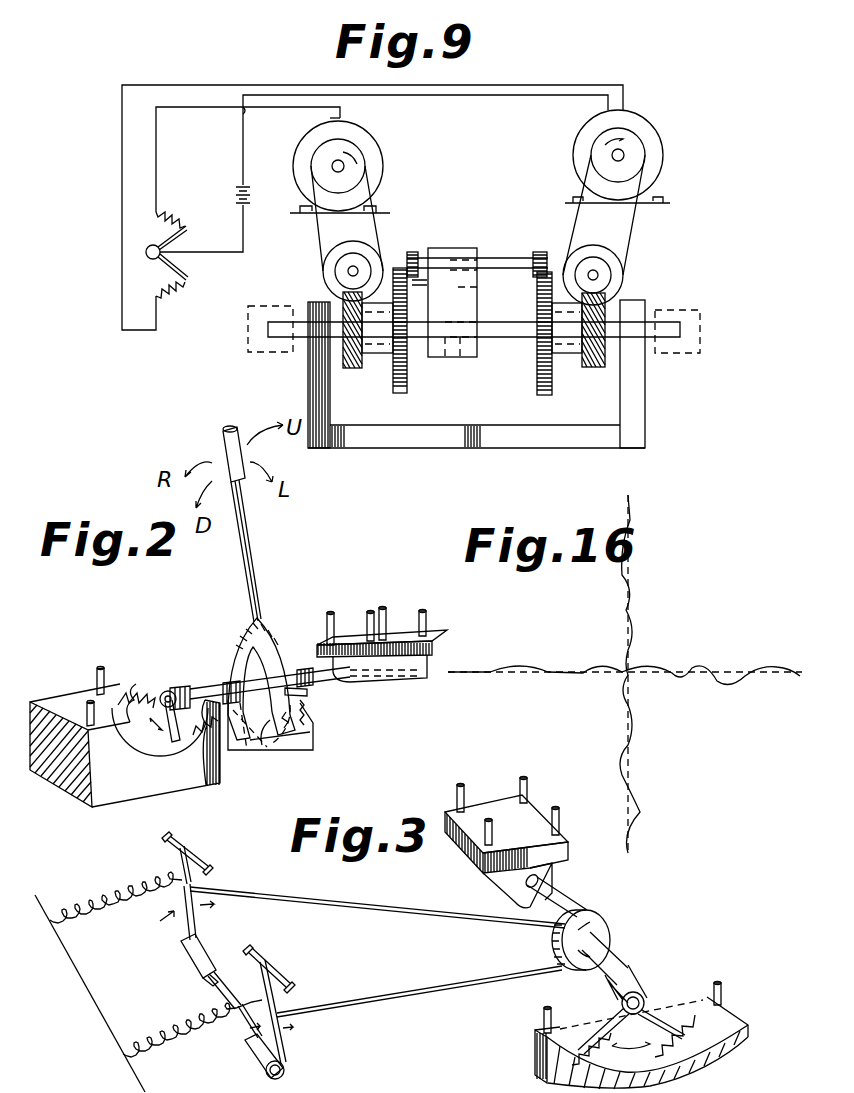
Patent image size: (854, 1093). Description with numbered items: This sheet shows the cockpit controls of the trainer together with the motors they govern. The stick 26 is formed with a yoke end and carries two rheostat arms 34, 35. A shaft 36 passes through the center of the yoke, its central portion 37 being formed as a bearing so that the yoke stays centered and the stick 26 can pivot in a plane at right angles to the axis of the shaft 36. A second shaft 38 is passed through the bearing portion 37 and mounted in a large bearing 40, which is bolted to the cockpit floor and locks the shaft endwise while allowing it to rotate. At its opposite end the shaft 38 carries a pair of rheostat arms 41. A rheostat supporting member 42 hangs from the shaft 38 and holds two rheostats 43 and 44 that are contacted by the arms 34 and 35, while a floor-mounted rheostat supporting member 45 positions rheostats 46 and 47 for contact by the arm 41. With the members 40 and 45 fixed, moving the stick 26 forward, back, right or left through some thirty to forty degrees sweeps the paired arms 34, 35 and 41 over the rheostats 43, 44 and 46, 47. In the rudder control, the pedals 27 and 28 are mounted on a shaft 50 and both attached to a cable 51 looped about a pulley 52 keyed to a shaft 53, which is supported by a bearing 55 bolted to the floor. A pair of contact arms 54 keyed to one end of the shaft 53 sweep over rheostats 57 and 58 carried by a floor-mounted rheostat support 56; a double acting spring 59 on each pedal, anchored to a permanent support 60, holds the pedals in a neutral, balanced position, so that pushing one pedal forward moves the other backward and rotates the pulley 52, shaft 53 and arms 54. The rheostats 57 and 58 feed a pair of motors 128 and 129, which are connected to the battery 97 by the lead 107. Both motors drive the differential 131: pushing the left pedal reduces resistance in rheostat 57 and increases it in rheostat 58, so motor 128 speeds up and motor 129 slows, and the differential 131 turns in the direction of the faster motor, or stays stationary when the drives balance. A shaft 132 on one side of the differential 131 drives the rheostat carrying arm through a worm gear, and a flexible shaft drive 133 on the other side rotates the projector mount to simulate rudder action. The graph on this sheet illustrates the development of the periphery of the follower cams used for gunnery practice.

In FIG. 2, the stick 26 is at (256, 560).
In FIG. 3, the rudder pedal 27 is at (195, 858).
In FIG. 3, the rudder pedal 28 is at (274, 972).
In FIG. 2, the rheostat arm 34 is at (240, 750).
In FIG. 2, the rheostat arm 35 is at (292, 727).
In FIG. 2, the shaft 36 is at (310, 693).
In FIG. 2, the central bearing portion 37 is at (250, 628).
In FIG. 2, the shaft 38 is at (197, 688).
In FIG. 2, the large bearing 40 is at (404, 640).
In FIG. 2, the rheostat arms 41 is at (146, 748).
In FIG. 2, the rheostat supporting member 42 is at (313, 735).
In FIG. 2, the rheostat 43 is at (263, 748).
In FIG. 2, the rheostat 44 is at (308, 708).
In FIG. 2, the rheostat supporting member 45 is at (75, 698).
In FIG. 2, the rheostat 46 is at (136, 690).
In FIG. 2, the rheostat 47 is at (194, 742).
In FIG. 3, the shaft 50 is at (210, 983).
In FIG. 3, the cable 51 is at (468, 912).
In FIG. 3, the pulley 52 is at (606, 925).
In FIG. 3, the shaft 53 is at (615, 966).
In FIG. 9, the contact arms 54 is at (187, 242).
In FIG. 3, the contact arms 54 is at (631, 1031).
In FIG. 3, the bearing 55 is at (500, 806).
In FIG. 3, the rheostat support 56 is at (733, 1020).
In FIG. 9, the rheostat 57 is at (180, 212).
In FIG. 3, the rheostat 57 is at (580, 1026).
In FIG. 9, the rheostat 58 is at (175, 293).
In FIG. 3, the rheostat 58 is at (676, 1010).
In FIG. 3, the double acting spring 59 is at (110, 888).
In FIG. 3, the permanent support 60 is at (85, 997).
In FIG. 9, the battery 97 is at (246, 187).
In FIG. 9, the lead 107 is at (243, 146).
In FIG. 9, the motor 128 is at (358, 134).
In FIG. 9, the motor 129 is at (664, 161).
In FIG. 9, the differential 131 is at (461, 243).
In FIG. 9, the shaft 132 is at (680, 312).
In FIG. 9, the flexible shaft drive 133 is at (268, 306).